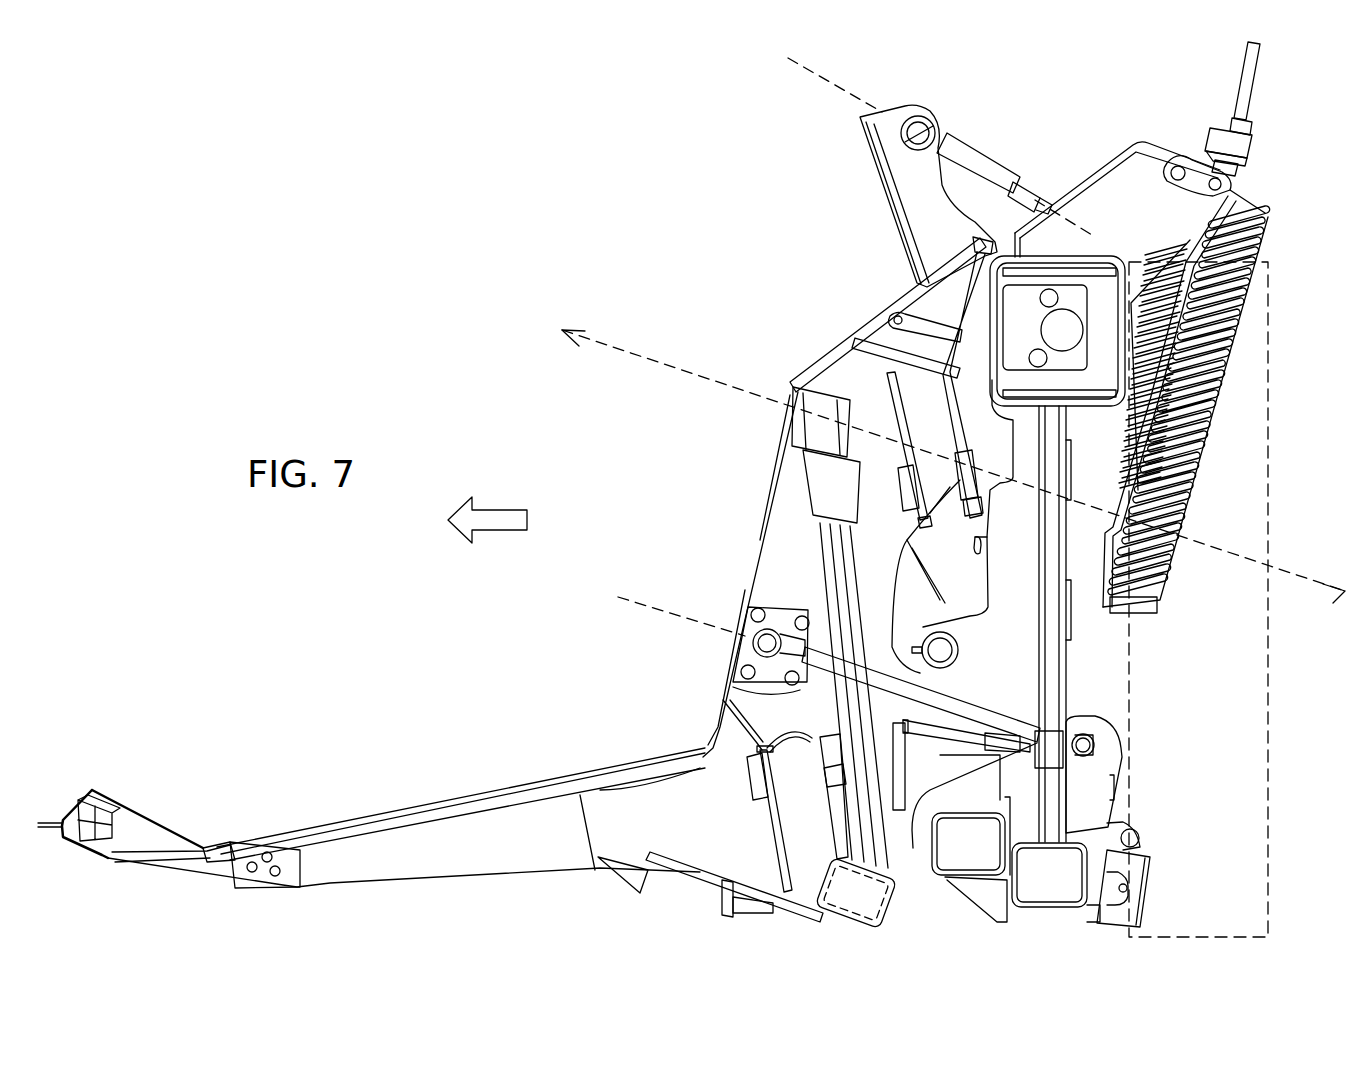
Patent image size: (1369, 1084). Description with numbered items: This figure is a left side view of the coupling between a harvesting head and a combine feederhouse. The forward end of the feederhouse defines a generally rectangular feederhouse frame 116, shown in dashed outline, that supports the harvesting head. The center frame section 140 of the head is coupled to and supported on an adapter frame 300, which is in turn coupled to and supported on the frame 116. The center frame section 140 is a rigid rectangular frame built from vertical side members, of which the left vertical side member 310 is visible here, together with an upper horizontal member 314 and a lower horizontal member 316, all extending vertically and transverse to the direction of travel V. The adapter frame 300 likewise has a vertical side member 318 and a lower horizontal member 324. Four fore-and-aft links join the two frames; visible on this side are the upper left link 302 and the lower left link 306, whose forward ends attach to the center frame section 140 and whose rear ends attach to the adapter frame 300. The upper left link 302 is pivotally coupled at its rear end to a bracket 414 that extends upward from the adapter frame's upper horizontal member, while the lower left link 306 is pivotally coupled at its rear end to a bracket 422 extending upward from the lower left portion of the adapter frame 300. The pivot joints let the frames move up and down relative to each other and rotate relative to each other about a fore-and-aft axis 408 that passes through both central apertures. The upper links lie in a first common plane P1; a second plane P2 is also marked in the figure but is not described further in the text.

The feederhouse frame 116 is at (1268, 803).
The center frame section 140 is at (857, 320).
The adapter frame 300 is at (1143, 210).
The upper left link 302 is at (990, 160).
The lower left link 306 is at (985, 700).
The vertical side member 310 is at (790, 545).
The upper horizontal member 314 is at (943, 250).
The lower horizontal member 316 is at (840, 917).
The vertical side member 318 is at (1083, 623).
The lower horizontal member 324 is at (930, 887).
The axis 408 is at (667, 367).
The bracket 414 is at (1065, 188).
The bracket 422 is at (1083, 723).
The first common plane P1 is at (852, 93).
The pivot axis P2 is at (675, 610).
The direction of travel V is at (490, 520).